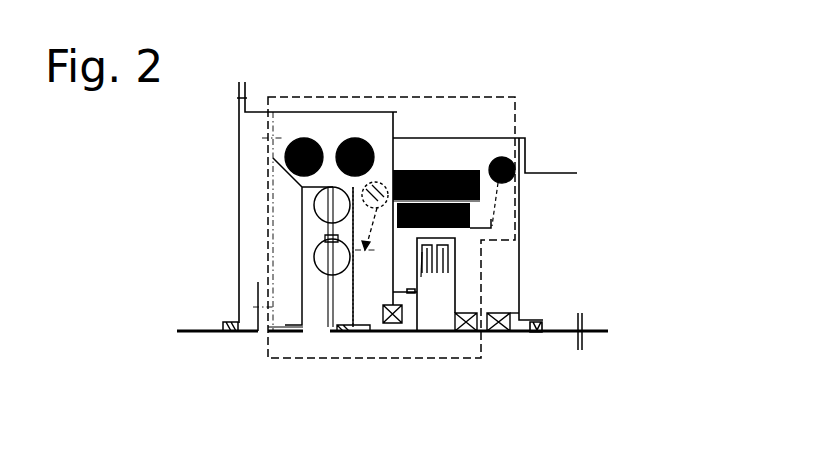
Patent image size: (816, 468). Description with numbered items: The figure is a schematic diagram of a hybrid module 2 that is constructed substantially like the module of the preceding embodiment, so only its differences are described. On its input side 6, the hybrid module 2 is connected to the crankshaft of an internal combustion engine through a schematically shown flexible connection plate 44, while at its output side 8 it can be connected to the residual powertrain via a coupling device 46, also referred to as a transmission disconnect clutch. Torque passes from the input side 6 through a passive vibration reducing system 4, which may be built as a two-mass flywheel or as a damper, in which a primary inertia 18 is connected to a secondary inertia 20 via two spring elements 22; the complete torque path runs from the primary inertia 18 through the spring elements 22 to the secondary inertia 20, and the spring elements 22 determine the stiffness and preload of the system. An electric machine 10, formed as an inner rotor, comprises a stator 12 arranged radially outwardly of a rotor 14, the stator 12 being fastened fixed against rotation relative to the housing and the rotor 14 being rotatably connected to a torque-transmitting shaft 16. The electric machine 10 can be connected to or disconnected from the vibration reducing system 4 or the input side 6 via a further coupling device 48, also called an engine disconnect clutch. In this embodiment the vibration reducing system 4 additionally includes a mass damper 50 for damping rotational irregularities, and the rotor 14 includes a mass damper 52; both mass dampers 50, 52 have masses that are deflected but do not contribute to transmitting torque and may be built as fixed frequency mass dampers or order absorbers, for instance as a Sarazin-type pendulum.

The hybrid module 2 is at (476, 95).
The vibration reducing system 4 is at (332, 326).
The input side 6 is at (277, 333).
The output side 8 is at (482, 331).
The electric machine 10 is at (479, 202).
The stator 12 is at (453, 170).
The rotor 14 is at (470, 212).
The shaft 16 is at (558, 333).
The primary inertia 18 is at (299, 138).
The secondary inertia 20 is at (358, 138).
The spring elements 22 is at (340, 213).
The flexible connection plate 44 is at (260, 303).
The coupling device 46 is at (582, 313).
The further coupling device 48 is at (422, 250).
The mass damper 50 is at (378, 183).
The mass damper 52 is at (520, 168).